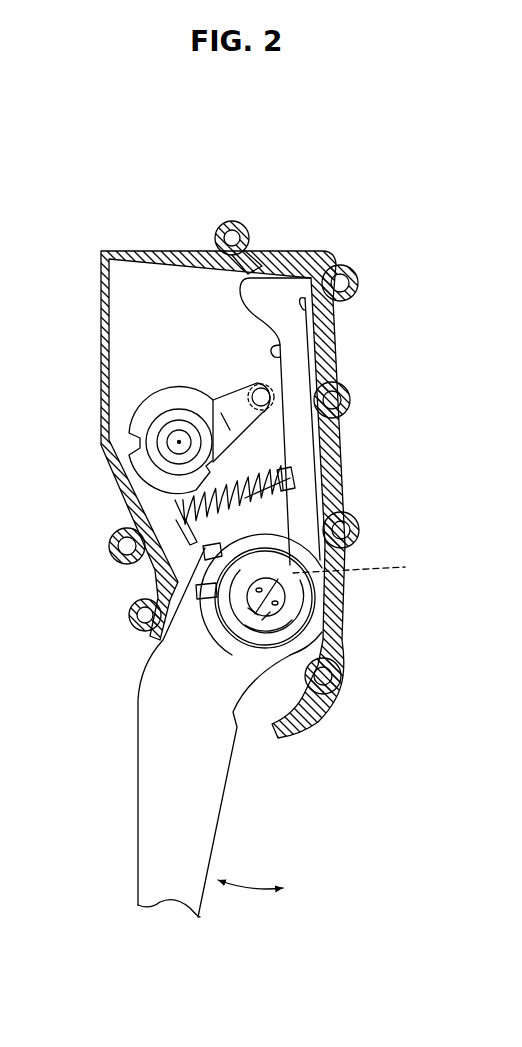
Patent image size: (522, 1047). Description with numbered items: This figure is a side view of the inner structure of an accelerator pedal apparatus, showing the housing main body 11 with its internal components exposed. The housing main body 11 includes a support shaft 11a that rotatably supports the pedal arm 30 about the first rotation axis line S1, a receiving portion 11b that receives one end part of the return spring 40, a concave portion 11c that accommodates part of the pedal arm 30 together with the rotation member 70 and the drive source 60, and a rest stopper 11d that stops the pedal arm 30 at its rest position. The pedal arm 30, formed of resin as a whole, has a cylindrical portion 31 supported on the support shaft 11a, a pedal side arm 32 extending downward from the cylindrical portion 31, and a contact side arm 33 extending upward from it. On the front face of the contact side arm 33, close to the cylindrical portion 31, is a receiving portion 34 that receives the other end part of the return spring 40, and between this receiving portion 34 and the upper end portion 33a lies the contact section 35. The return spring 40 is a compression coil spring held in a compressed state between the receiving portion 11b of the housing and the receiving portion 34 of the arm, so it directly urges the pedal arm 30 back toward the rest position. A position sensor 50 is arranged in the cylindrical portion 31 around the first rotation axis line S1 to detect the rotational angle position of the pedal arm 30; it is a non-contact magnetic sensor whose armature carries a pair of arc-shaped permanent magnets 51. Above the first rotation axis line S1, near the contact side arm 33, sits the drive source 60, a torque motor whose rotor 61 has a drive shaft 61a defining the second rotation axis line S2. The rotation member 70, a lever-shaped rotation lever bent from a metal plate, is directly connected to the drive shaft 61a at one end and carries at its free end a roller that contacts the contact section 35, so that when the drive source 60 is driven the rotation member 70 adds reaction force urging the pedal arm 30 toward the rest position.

The housing main body 11 is at (100, 382).
The support shaft 11a is at (369, 568).
The receiving portion 11b is at (176, 504).
The concave portion 11c is at (213, 298).
The rest stopper 11d is at (346, 303).
The pedal arm 30 is at (170, 732).
The cylindrical portion 31 is at (300, 552).
The pedal side arm 32 is at (152, 822).
The contact side arm 33 is at (328, 377).
The upper end portion 33a is at (298, 292).
The receiving portion 34 is at (290, 478).
The contact section 35 is at (283, 343).
The return spring 40 is at (244, 467).
The position sensor 50 is at (300, 614).
The arc-shaped permanent magnets 51 is at (246, 614).
The drive source 60 is at (164, 401).
The rotor 61 is at (147, 422).
The drive shaft 61a is at (180, 439).
The rotation member 70 is at (231, 386).
The first rotation axis line S1 is at (297, 611).
The second rotation axis line S2 is at (179, 439).